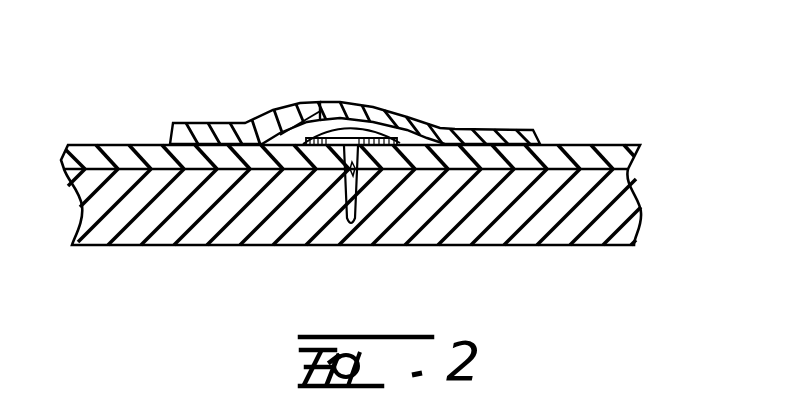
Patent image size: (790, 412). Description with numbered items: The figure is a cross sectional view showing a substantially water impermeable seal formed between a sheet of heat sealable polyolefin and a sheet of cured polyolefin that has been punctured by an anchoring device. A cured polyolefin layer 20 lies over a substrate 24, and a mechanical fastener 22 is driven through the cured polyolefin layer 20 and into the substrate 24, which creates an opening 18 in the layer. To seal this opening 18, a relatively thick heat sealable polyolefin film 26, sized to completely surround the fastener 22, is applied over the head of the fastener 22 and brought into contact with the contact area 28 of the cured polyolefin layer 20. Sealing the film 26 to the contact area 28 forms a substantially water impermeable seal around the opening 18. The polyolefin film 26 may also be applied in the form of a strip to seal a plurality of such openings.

The opening 18 is at (359, 186).
The cured polyolefin layer 20 is at (600, 152).
The mechanical fastener 22 is at (337, 131).
The substrate 24 is at (541, 232).
The heat sealable polyolefin film 26 is at (532, 138).
The contact area 28 is at (533, 108).